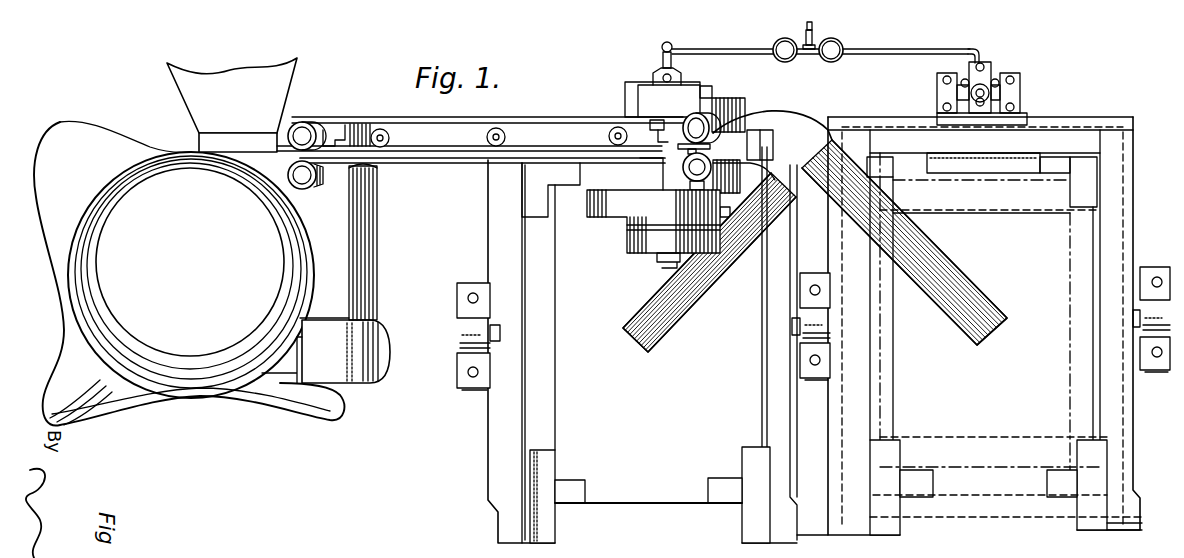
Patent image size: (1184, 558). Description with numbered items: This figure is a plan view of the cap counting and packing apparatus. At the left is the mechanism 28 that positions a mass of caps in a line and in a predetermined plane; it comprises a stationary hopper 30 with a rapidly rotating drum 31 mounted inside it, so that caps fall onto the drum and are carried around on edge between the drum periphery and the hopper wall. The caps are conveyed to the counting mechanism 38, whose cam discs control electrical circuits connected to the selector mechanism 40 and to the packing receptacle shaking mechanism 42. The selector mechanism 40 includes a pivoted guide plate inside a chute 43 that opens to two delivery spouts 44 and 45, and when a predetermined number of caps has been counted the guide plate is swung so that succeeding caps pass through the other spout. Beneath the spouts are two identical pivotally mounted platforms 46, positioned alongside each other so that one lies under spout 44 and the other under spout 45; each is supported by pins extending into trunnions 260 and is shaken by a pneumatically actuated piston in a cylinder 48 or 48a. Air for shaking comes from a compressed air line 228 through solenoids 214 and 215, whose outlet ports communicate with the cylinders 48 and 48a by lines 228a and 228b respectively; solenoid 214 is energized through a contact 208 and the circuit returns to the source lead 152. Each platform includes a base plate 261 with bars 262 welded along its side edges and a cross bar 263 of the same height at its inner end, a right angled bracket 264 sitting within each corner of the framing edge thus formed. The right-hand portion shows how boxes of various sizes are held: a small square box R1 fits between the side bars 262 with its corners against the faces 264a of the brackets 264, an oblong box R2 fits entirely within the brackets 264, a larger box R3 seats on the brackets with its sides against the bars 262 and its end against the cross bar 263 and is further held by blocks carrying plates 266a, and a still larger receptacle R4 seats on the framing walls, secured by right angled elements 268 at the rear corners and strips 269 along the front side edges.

The mechanism 28 is at (258, 388).
The stationary hopper 30 is at (138, 383).
The rotary drum 31 is at (205, 355).
The counting mechanism 38 is at (620, 204).
The selector mechanism 40 is at (729, 99).
The packing receptacle shaking mechanism 42 is at (1025, 106).
The chute 43 is at (742, 131).
The delivery spout 44 is at (657, 294).
The delivery spout 45 is at (986, 306).
The platform 46 is at (500, 426).
The cylinder 48 is at (652, 74).
The shaking cylinder 48a is at (993, 74).
The source lead 152 is at (366, 556).
The contact 208 is at (599, 548).
The solenoid 214 is at (781, 40).
The solenoid 215 is at (858, 53).
The line 228 is at (858, 37).
The line 228a is at (702, 45).
The line 228b is at (953, 39).
The trunnion 260 is at (457, 333).
The base plate 261 is at (645, 478).
The bar 262 is at (510, 377).
The cross bar 263 is at (993, 158).
The right angled bracket 264 is at (545, 470).
The face 264a is at (1072, 212).
The plate 266a is at (1077, 523).
The right angled element 268 is at (843, 117).
The strip 269 is at (830, 533).
The box R1 is at (1002, 437).
The box R2 is at (1030, 465).
The box R3 is at (1033, 485).
The receptacle R4 is at (963, 520).